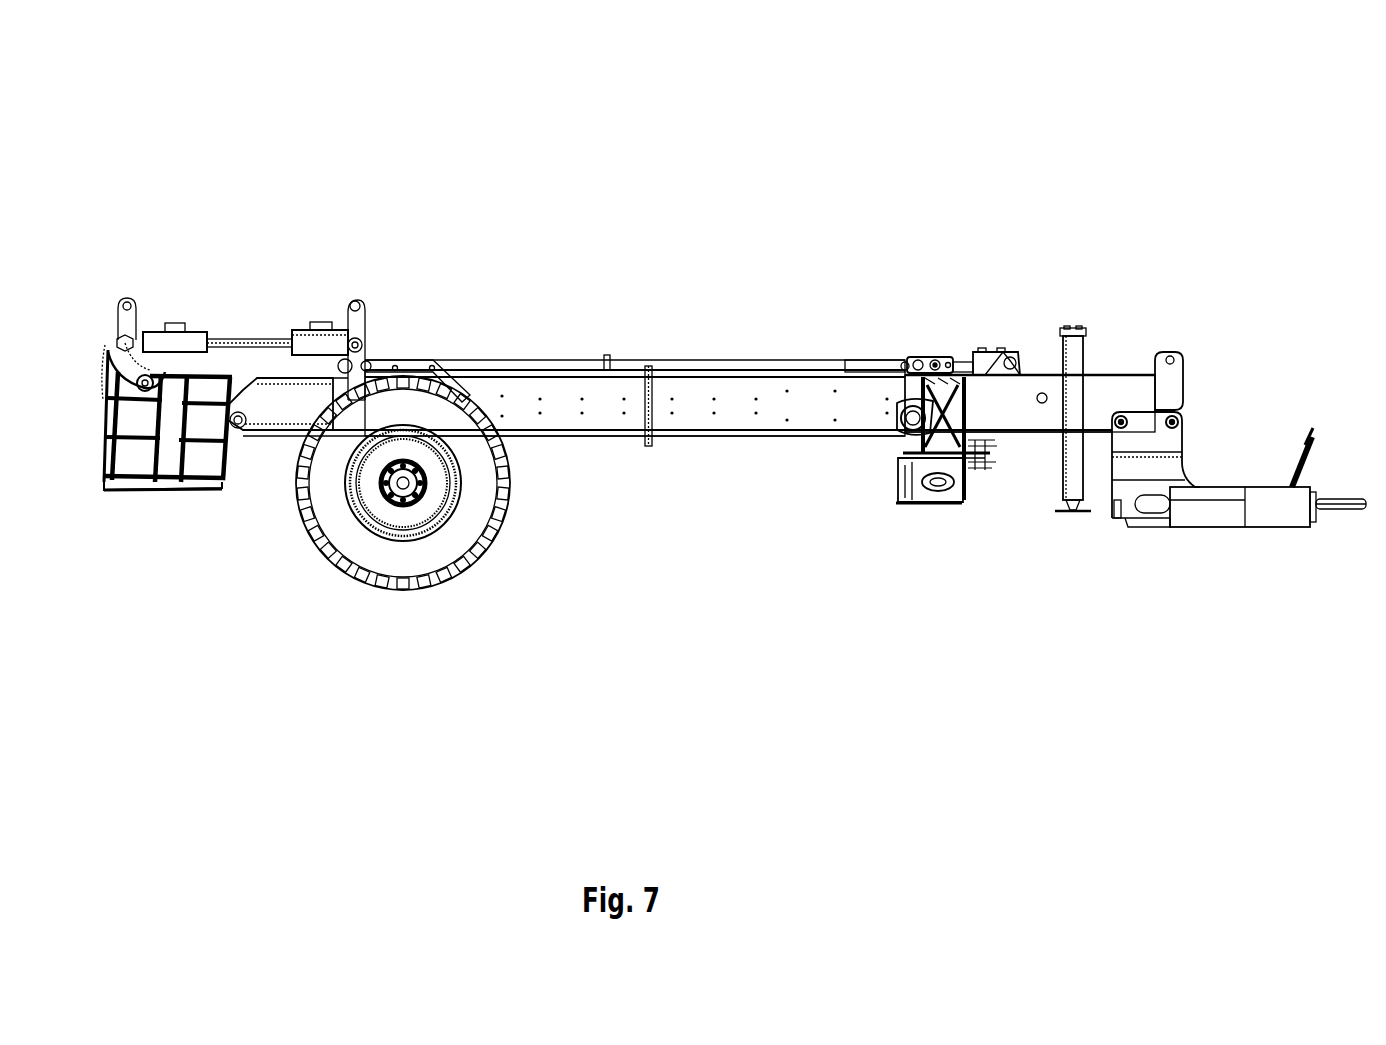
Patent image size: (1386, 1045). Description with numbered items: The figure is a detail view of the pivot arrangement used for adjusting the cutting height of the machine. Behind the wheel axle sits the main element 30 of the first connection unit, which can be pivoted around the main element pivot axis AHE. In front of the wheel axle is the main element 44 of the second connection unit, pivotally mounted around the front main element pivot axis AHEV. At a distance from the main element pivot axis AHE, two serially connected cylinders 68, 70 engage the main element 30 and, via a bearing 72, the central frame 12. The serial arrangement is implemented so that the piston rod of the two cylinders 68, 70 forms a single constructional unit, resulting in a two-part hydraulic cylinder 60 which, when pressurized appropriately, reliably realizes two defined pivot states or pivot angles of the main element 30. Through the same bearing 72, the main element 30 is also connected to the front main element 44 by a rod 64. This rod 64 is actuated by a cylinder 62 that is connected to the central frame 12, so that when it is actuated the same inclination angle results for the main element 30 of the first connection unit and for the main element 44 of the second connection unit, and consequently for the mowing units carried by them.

The central frame 12 is at (763, 399).
The main element of the first connection unit 30 is at (180, 393).
The main element of the second connection unit 44 is at (908, 400).
The two-part hydraulic cylinder 60 is at (272, 291).
The cylinder 62 is at (988, 363).
The rod 64 is at (660, 362).
The cylinder 68 is at (172, 338).
The cylinder 70 is at (317, 345).
The bearing 72 is at (363, 342).
The main element pivot axis AHE is at (246, 438).
The front main element pivot axis AHEV is at (913, 432).